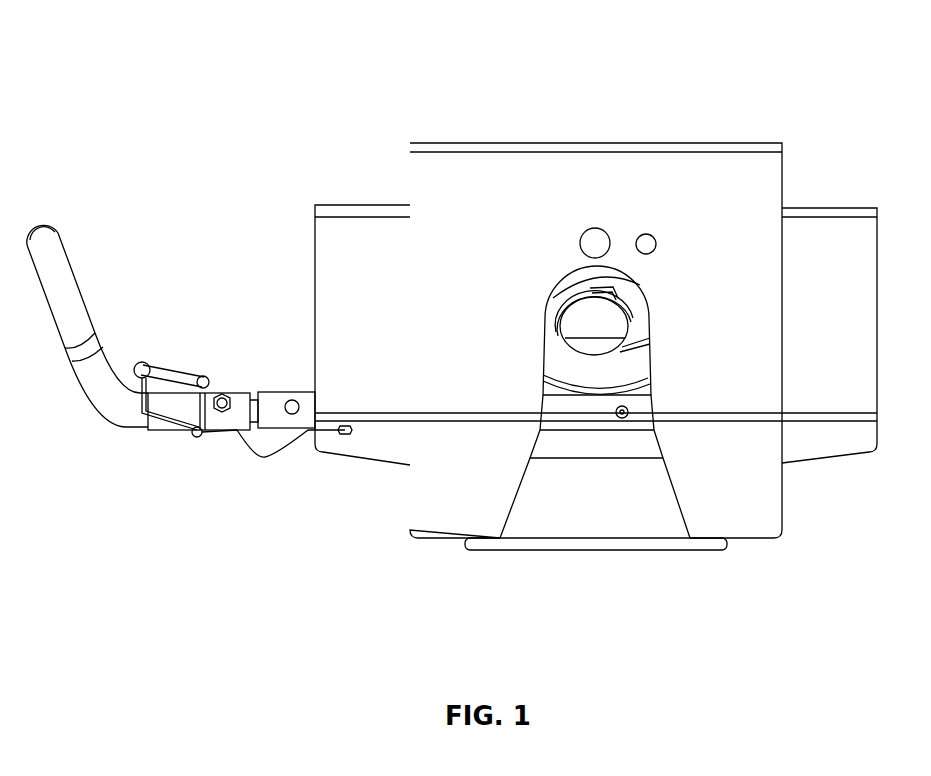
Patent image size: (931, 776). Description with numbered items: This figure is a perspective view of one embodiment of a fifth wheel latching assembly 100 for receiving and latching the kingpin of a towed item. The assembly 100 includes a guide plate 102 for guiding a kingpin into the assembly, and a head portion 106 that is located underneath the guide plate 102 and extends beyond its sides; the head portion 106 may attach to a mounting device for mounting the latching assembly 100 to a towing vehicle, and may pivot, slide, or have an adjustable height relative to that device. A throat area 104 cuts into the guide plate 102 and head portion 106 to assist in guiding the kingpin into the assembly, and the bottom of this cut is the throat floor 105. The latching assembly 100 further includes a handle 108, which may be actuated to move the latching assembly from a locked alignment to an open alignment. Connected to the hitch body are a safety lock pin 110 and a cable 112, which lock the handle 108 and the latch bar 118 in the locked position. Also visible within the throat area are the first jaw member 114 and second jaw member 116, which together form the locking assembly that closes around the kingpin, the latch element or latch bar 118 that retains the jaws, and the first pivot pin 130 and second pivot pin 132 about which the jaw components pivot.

The fifth wheel latching assembly 100 is at (143, 54).
The guide plate 102 is at (740, 165).
The throat area 104 is at (487, 565).
The throat floor 105 is at (576, 523).
The head portion 106 is at (346, 225).
The handle 108 is at (62, 257).
The safety lock pin 110 is at (175, 373).
The cable 112 is at (260, 457).
The first jaw member 114 is at (567, 295).
The second jaw member 116 is at (617, 283).
The latch bar 118 is at (585, 415).
The first pivot pin 130 is at (595, 243).
The second pivot pin 132 is at (646, 243).